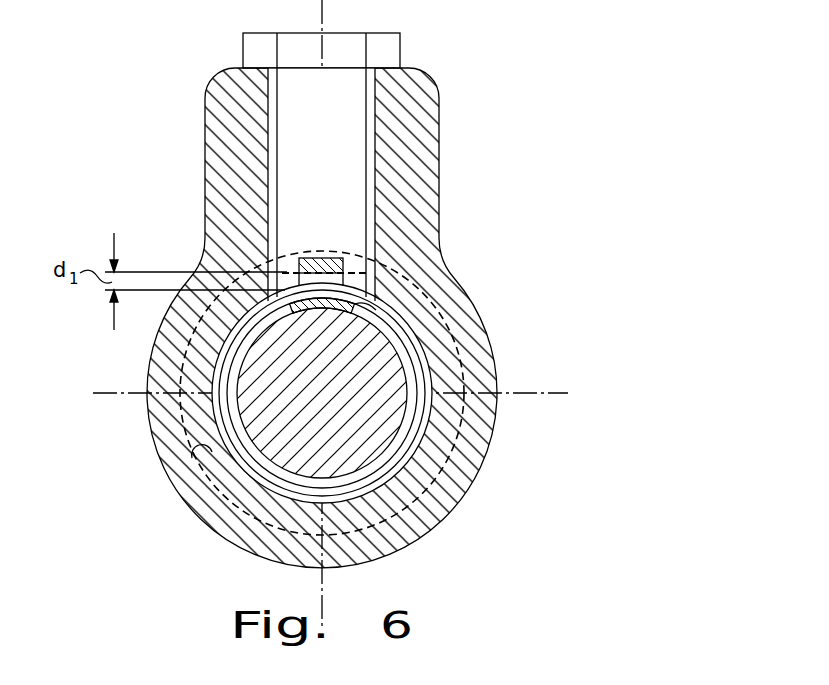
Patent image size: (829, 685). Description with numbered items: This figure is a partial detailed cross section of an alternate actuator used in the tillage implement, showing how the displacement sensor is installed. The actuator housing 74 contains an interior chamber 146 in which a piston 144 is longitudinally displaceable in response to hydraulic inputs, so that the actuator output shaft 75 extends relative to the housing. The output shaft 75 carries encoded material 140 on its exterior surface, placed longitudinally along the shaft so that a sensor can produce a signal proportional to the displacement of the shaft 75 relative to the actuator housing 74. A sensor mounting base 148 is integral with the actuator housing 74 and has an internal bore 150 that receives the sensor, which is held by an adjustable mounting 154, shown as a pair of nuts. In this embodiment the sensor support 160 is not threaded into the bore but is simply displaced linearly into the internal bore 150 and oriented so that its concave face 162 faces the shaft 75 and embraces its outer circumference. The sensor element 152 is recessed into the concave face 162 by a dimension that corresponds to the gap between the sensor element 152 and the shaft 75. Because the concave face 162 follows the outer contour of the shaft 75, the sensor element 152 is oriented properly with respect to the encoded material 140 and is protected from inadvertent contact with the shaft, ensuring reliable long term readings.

The actuator housing 74 is at (480, 318).
The actuator output shaft 75 is at (410, 379).
The encoded material 140 is at (408, 430).
The piston 144 is at (193, 418).
The interior chamber 146 is at (210, 452).
The sensor mounting base 148 is at (439, 205).
The internal bore 150 is at (283, 179).
The sensor element 152 is at (315, 276).
The adjustable mounting 154 is at (404, 49).
The sensor support 160 is at (352, 156).
The concave face 162 is at (362, 309).